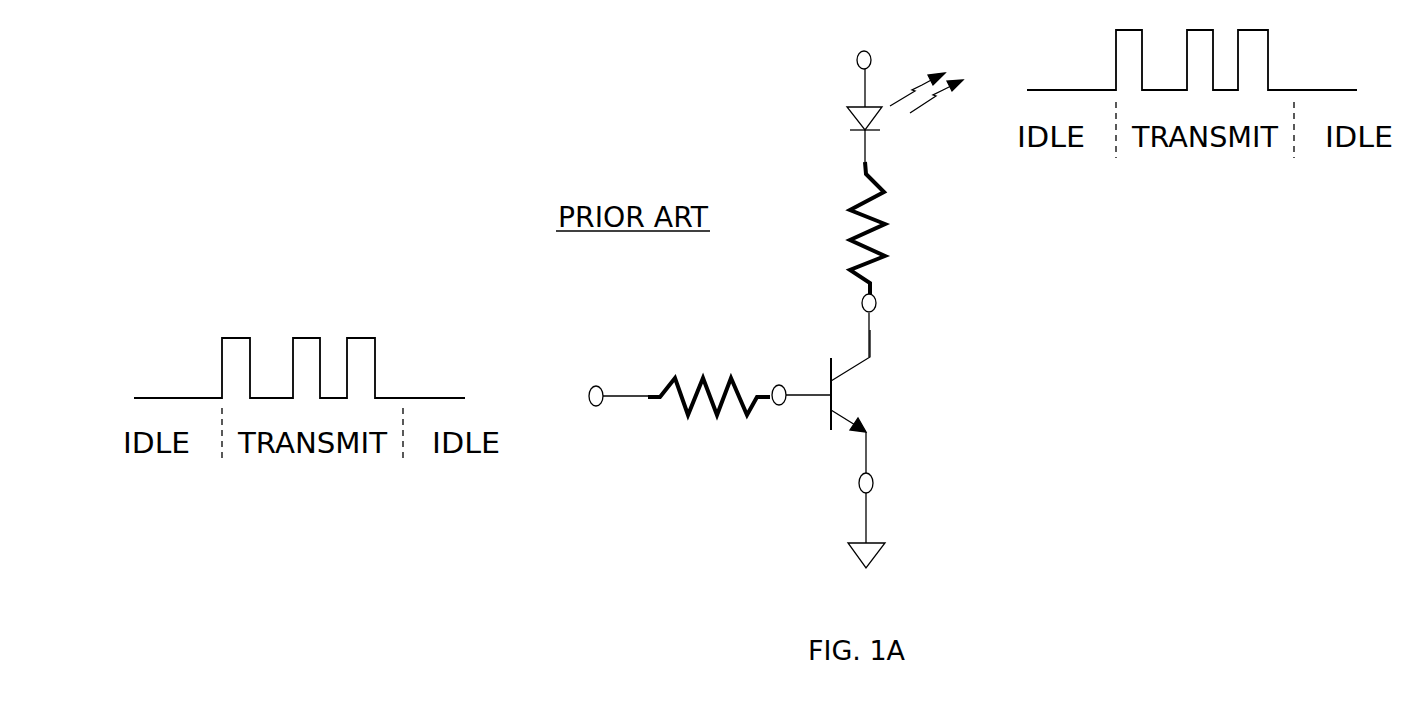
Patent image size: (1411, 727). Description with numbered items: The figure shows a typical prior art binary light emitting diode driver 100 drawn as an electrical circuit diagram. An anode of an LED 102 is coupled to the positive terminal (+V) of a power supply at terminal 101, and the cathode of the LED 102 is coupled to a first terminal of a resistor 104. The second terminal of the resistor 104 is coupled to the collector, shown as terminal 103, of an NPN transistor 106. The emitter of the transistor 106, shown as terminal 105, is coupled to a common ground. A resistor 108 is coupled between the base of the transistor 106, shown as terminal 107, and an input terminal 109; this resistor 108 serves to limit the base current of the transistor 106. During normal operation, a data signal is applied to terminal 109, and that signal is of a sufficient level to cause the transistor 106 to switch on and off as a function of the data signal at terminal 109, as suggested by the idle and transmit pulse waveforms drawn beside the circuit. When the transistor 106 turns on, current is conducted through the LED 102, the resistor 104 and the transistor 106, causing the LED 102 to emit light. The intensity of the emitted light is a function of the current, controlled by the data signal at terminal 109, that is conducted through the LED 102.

The binary light emitting diode driver 100 is at (632, 124).
The terminal 101 is at (857, 52).
The LED 102 is at (850, 114).
The collector terminal 103 is at (877, 303).
The resistor 104 is at (886, 249).
The emitter terminal 105 is at (874, 483).
The NPN transistor 106 is at (845, 413).
The base terminal 107 is at (779, 406).
The resistor 108 is at (730, 380).
The terminal 109 is at (590, 385).